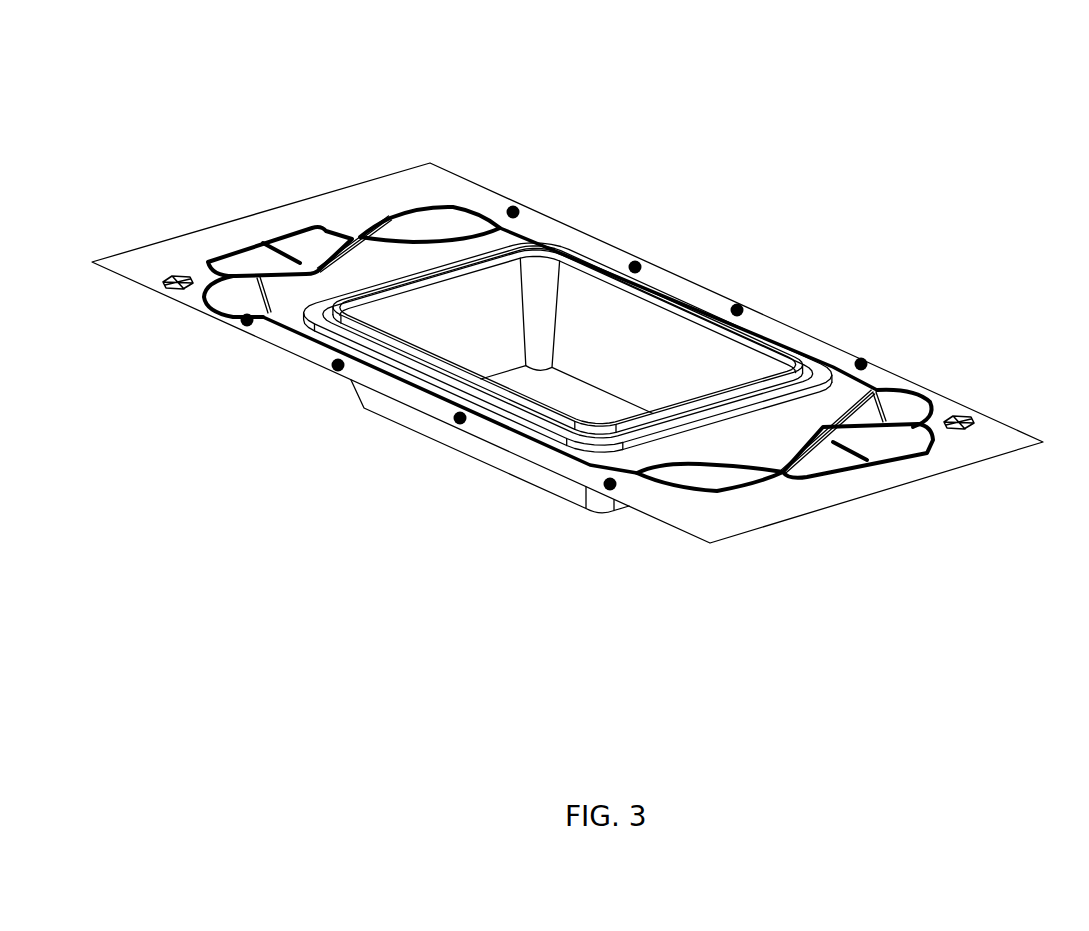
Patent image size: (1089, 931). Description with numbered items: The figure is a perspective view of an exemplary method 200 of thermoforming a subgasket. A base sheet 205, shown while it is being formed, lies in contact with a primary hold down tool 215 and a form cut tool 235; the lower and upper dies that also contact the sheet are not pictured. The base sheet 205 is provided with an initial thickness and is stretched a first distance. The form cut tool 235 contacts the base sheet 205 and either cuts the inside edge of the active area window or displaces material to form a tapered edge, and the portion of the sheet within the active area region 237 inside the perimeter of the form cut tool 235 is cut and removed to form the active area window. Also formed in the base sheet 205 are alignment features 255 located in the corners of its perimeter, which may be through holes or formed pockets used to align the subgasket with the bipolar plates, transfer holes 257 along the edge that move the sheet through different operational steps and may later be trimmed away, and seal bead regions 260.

The method of thermoforming a subgasket 200 is at (884, 149).
The base sheet 205 is at (860, 477).
The primary hold down tool 215 is at (298, 318).
The form cut tool 235 is at (333, 327).
The active area region 237 is at (634, 307).
The alignment features 255 is at (177, 278).
The transfer holes 257 is at (462, 420).
The seal bead regions 260 is at (480, 214).